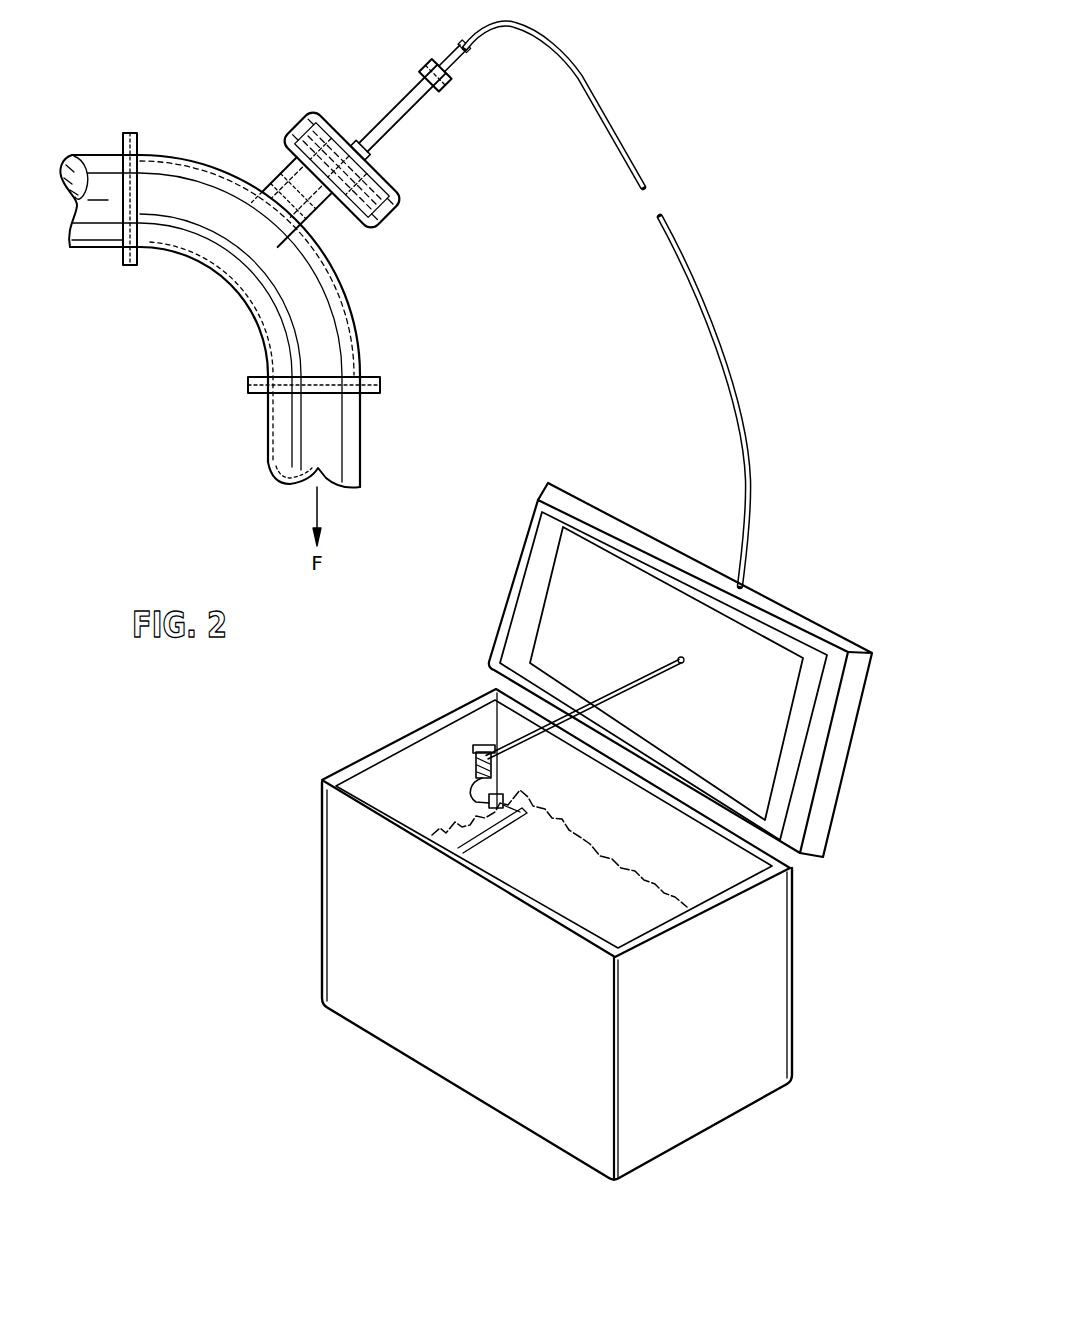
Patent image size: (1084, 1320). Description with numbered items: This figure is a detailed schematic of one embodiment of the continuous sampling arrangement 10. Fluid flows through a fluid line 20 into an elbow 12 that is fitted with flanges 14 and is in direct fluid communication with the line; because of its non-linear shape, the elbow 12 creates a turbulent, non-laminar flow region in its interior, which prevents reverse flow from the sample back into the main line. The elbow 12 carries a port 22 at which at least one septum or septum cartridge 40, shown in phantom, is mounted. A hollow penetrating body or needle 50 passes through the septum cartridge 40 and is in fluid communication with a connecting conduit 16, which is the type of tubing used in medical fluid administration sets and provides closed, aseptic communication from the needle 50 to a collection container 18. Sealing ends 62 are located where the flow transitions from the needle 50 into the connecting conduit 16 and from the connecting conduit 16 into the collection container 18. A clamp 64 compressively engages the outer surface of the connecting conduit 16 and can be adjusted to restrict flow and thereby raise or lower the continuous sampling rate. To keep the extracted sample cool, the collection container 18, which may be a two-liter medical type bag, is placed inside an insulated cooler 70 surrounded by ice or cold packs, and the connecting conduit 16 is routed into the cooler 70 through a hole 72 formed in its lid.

The sampling arrangement 10 is at (695, 88).
The elbow 12 is at (285, 311).
The flanges 14 is at (137, 142).
The connecting conduit 16 is at (718, 352).
The collection container 18 is at (553, 892).
The fluid line 20 is at (100, 155).
The port 22 is at (266, 189).
The septum cartridge 40 is at (347, 141).
The needle 50 is at (378, 143).
The sealing ends 62 is at (403, 104).
The clamp 64 is at (473, 760).
The insulated cooler 70 is at (328, 878).
The hole 72 is at (685, 668).